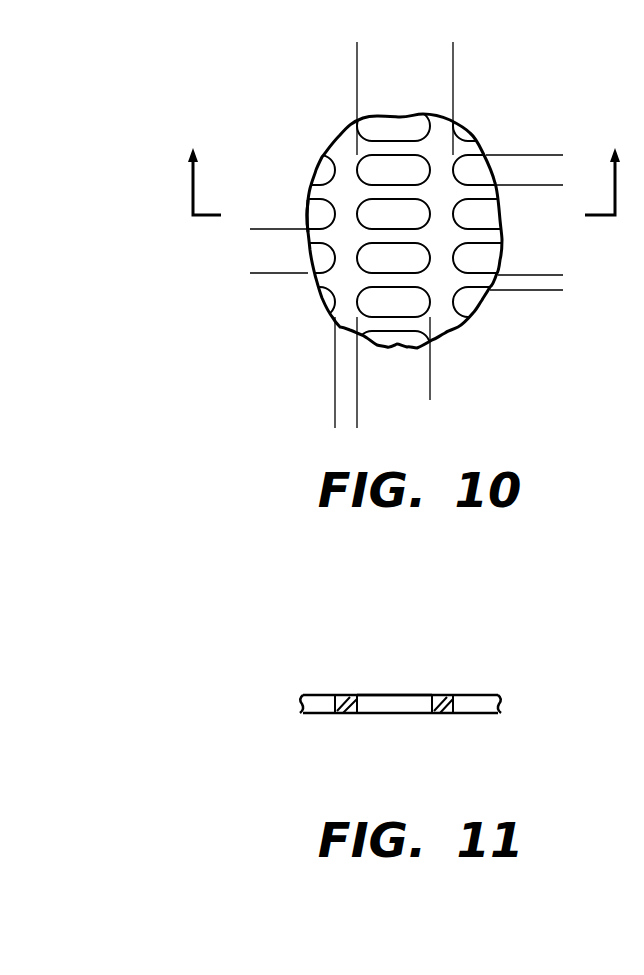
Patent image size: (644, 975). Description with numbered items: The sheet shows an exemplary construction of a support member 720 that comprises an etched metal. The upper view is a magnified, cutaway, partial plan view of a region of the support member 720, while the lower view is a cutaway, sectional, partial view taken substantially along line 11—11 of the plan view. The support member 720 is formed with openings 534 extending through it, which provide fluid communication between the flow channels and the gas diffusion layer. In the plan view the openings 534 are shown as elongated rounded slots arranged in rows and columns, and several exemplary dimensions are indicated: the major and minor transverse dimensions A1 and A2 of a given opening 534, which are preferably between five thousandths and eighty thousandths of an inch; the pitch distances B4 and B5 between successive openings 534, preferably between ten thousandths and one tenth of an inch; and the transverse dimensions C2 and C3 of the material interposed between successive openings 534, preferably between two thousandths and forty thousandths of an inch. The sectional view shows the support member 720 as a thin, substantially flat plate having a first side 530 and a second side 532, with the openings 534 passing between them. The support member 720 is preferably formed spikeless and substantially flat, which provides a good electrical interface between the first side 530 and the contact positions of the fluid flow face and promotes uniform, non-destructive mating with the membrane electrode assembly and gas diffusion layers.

In FIG. 10, the support member 720 is at (282, 47).
In FIG. 11, the support member 720 is at (282, 640).
In FIG. 11, the first side 530 is at (447, 738).
In FIG. 10, the second side 532 is at (299, 320).
In FIG. 11, the second side 532 is at (350, 682).
In FIG. 10, the openings 534 is at (400, 163).
In FIG. 11, the openings 534 is at (412, 705).
In FIG. 10, the section line 11— 11 is at (403, 165).
In FIG. 10, the pitch B4 is at (453, 47).
In FIG. 10, the transverse dimension of opening A2 is at (550, 222).
In FIG. 10, the transverse dimension of interposed material C3 is at (550, 228).
In FIG. 10, the pitch B5 is at (266, 178).
In FIG. 10, the transverse dimension of opening A1 is at (357, 380).
In FIG. 10, the transverse dimension of interposed material C2 is at (298, 422).